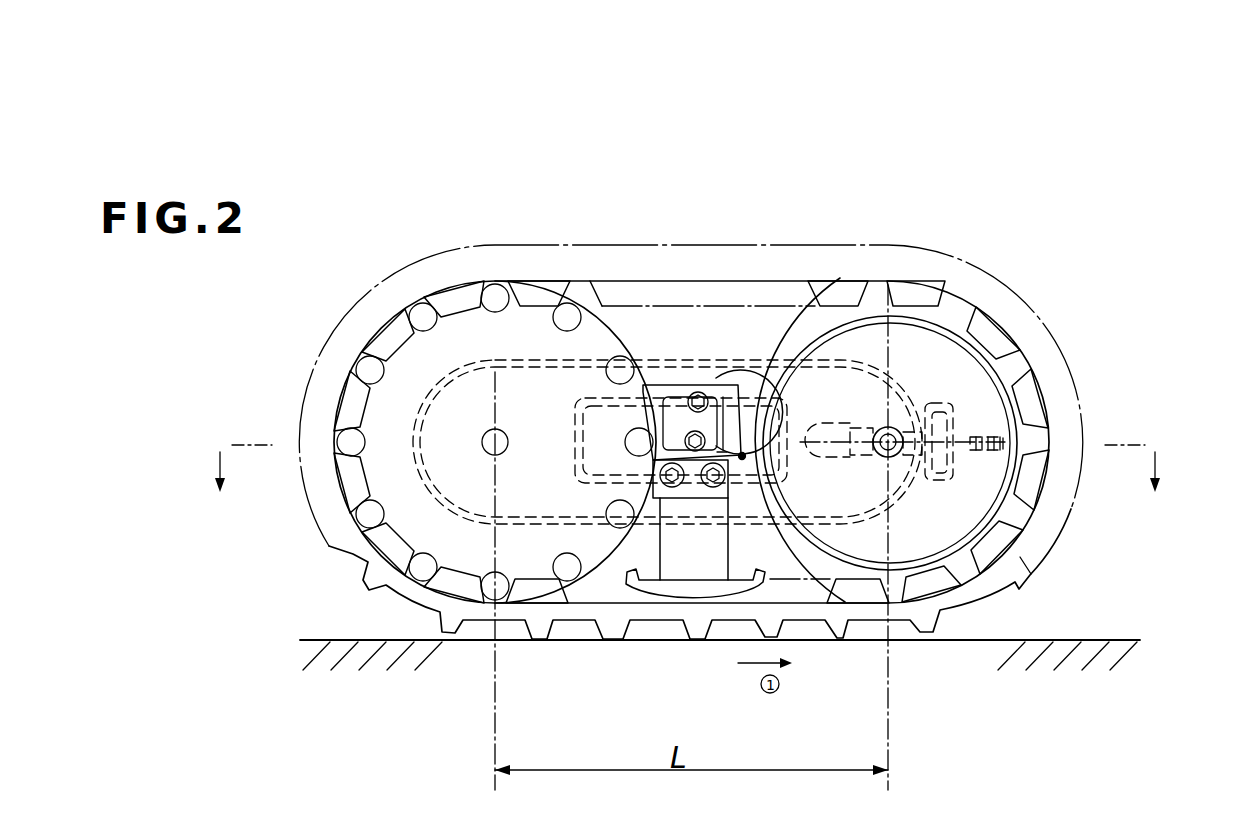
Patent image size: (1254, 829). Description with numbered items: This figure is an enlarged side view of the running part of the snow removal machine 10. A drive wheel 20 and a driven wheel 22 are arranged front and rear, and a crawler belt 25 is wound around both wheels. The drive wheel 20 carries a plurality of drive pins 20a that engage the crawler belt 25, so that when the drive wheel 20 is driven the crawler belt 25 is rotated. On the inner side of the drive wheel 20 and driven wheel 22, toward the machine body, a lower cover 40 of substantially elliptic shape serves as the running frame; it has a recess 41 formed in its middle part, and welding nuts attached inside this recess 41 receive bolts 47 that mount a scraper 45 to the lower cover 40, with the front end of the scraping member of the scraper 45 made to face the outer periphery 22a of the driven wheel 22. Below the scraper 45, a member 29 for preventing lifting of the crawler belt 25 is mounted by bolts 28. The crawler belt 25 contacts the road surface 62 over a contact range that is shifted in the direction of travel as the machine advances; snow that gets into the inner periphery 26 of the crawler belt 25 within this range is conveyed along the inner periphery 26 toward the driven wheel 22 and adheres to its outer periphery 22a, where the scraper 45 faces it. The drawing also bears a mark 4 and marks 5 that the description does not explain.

The snow removal machine 10 is at (1023, 126).
The drive wheel 20 is at (462, 326).
The drive pins 20a is at (418, 307).
The driven wheel 22 is at (965, 298).
The outer periphery of the driven wheel 22a is at (846, 284).
The crawler belt 25 is at (410, 591).
The inner periphery of the crawler belt 26 is at (607, 578).
The bolts 28 is at (712, 489).
The member for preventing lifting of the crawler belt 29 is at (727, 592).
The pivot point 4 is at (745, 459).
The lower cover 40 is at (647, 357).
The recess 41 is at (667, 390).
The scraper 45 is at (738, 412).
The bolts 47 is at (705, 433).
The section line 5- 5 is at (685, 456).
The road surface 62 is at (1086, 640).